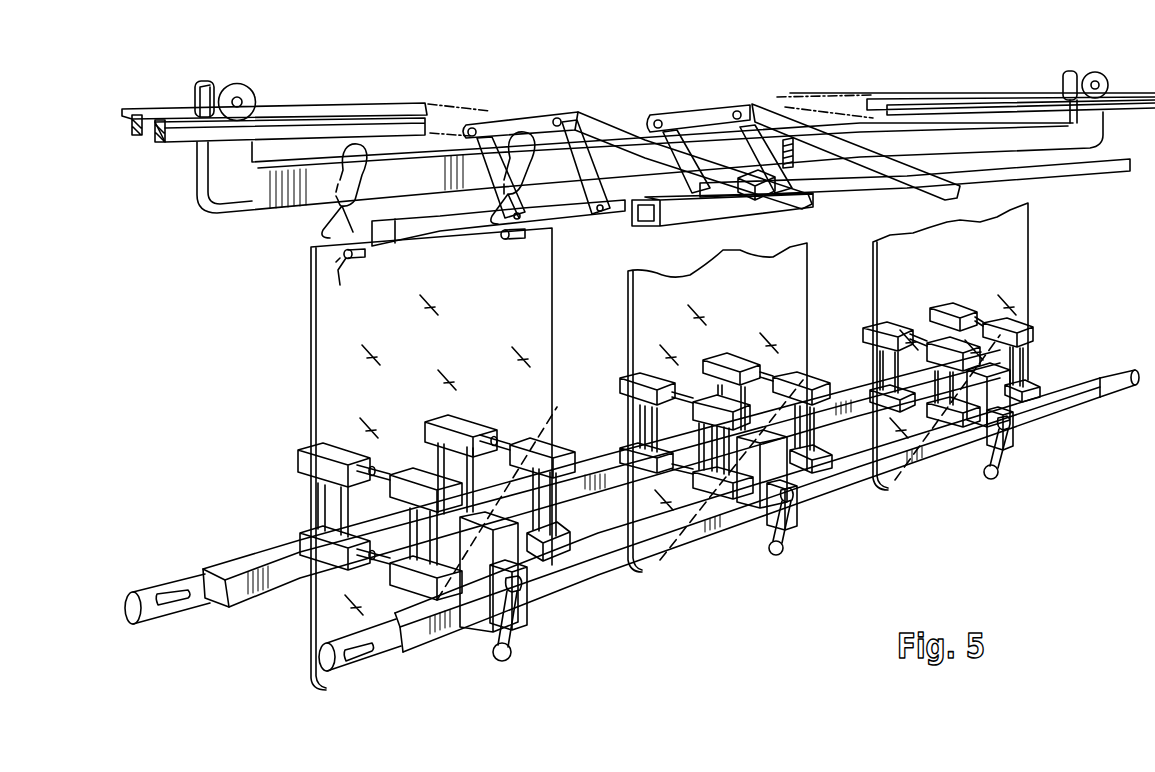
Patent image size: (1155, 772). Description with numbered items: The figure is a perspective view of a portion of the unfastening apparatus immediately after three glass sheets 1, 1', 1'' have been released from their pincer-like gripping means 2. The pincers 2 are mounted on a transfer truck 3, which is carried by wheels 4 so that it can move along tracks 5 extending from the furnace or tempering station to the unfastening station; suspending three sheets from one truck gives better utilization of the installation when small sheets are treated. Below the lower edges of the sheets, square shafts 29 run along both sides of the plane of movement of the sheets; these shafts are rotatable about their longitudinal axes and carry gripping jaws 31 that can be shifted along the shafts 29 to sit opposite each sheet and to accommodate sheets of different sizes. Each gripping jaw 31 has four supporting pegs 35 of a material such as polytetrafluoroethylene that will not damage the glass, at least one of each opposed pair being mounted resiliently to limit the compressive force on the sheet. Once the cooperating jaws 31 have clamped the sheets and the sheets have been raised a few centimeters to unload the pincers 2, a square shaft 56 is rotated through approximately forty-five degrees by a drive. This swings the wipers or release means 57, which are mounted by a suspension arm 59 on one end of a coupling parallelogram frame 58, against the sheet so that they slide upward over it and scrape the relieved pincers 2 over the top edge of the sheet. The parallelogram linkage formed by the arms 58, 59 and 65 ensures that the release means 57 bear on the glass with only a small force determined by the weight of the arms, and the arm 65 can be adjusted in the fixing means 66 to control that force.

The glass sheet 1 is at (415, 459).
The glass sheet 1' is at (698, 407).
The glass sheet 1'' is at (979, 346).
The pincer-like gripping means 2 is at (367, 181).
The transfer truck 3 is at (233, 216).
The wheels 4 is at (245, 94).
The tracks 5 is at (160, 143).
The square shafts 29 is at (235, 566).
The gripping jaws 31 is at (463, 418).
The supporting pegs 35 is at (500, 445).
The square shaft 56 is at (667, 218).
The release means 57 is at (342, 266).
The coupling parallelogram frame 58 is at (680, 168).
The suspension arm 59 is at (444, 232).
The arm 65 is at (603, 132).
The fixing means 66 is at (750, 178).